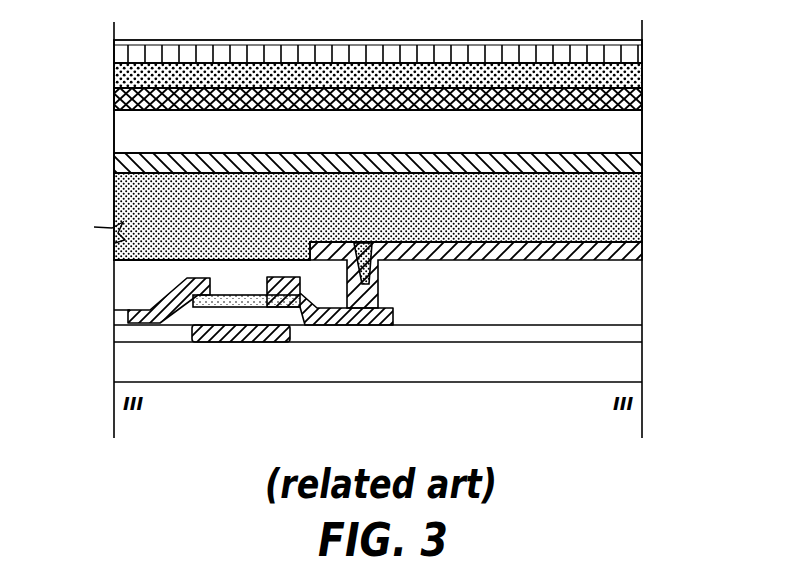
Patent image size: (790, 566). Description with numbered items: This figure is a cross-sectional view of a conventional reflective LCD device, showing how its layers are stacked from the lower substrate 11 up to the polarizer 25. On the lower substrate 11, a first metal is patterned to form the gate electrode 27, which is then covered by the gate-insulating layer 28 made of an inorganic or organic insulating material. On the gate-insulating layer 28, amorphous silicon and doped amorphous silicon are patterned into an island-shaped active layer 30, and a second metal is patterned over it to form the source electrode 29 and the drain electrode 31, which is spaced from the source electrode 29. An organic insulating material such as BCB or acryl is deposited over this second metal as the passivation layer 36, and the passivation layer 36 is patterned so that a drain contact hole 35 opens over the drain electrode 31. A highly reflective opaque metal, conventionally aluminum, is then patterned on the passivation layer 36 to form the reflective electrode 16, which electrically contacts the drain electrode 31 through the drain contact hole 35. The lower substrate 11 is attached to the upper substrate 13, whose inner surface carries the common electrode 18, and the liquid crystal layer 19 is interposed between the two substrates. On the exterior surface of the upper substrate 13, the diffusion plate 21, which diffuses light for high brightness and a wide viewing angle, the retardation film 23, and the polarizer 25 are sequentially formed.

The lower substrate 11 is at (412, 373).
The upper substrate 13 is at (630, 137).
The reflective electrode 16 is at (638, 252).
The common electrode 18 is at (638, 162).
The liquid crystal layer 19 is at (625, 202).
The diffusion plate 21 is at (640, 98).
The retardation film 23 is at (640, 70).
The polarizer 25 is at (632, 48).
The gate electrode 27 is at (250, 342).
The gate-insulating layer 28 is at (632, 334).
The source electrode 29 is at (183, 278).
The active layer 30 is at (235, 295).
The drain electrode 31 is at (283, 277).
The drain contact hole 35 is at (362, 278).
The passivation layer 36 is at (628, 292).